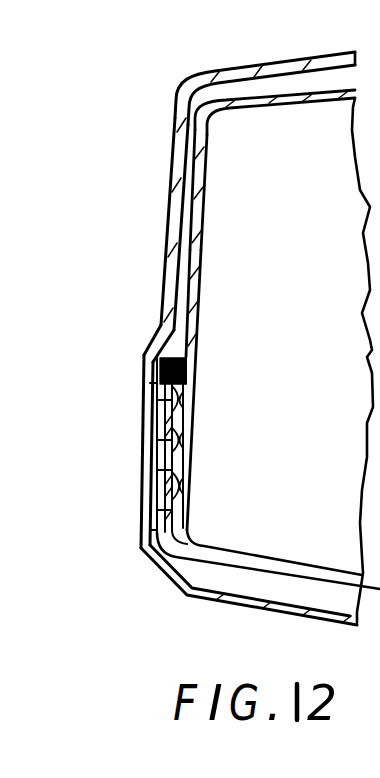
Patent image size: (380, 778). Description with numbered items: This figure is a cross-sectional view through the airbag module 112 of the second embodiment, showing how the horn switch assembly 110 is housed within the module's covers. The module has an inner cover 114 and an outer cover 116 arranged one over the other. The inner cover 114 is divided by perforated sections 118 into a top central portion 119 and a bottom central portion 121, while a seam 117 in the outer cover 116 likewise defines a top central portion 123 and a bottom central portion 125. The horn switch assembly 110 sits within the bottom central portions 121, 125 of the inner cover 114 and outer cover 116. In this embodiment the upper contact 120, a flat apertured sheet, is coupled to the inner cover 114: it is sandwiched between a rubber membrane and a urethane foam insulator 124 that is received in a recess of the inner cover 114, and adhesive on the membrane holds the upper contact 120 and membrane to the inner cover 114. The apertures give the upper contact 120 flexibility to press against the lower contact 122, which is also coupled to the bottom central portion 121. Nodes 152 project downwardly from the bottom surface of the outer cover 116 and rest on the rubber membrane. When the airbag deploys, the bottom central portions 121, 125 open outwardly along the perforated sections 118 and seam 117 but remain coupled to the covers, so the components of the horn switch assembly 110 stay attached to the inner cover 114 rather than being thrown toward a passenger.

The airbag module 112 is at (171, 74).
The outer cover 116 is at (175, 118).
The top central portion of the outer cover 123 is at (172, 189).
The seam 117 is at (163, 331).
The inner cover 114 is at (284, 99).
The top central portion of the inner cover 119 is at (214, 160).
The perforated sections 118 is at (214, 296).
The horn switch assembly 110 is at (122, 406).
The nodes 152 is at (158, 366).
The bottom central portion of the outer cover 125 is at (143, 452).
The upper contact 120 is at (150, 481).
The lower contact 122 is at (188, 386).
The urethane foam insulator 124 is at (183, 441).
The bottom central portion of the inner cover 121 is at (186, 497).